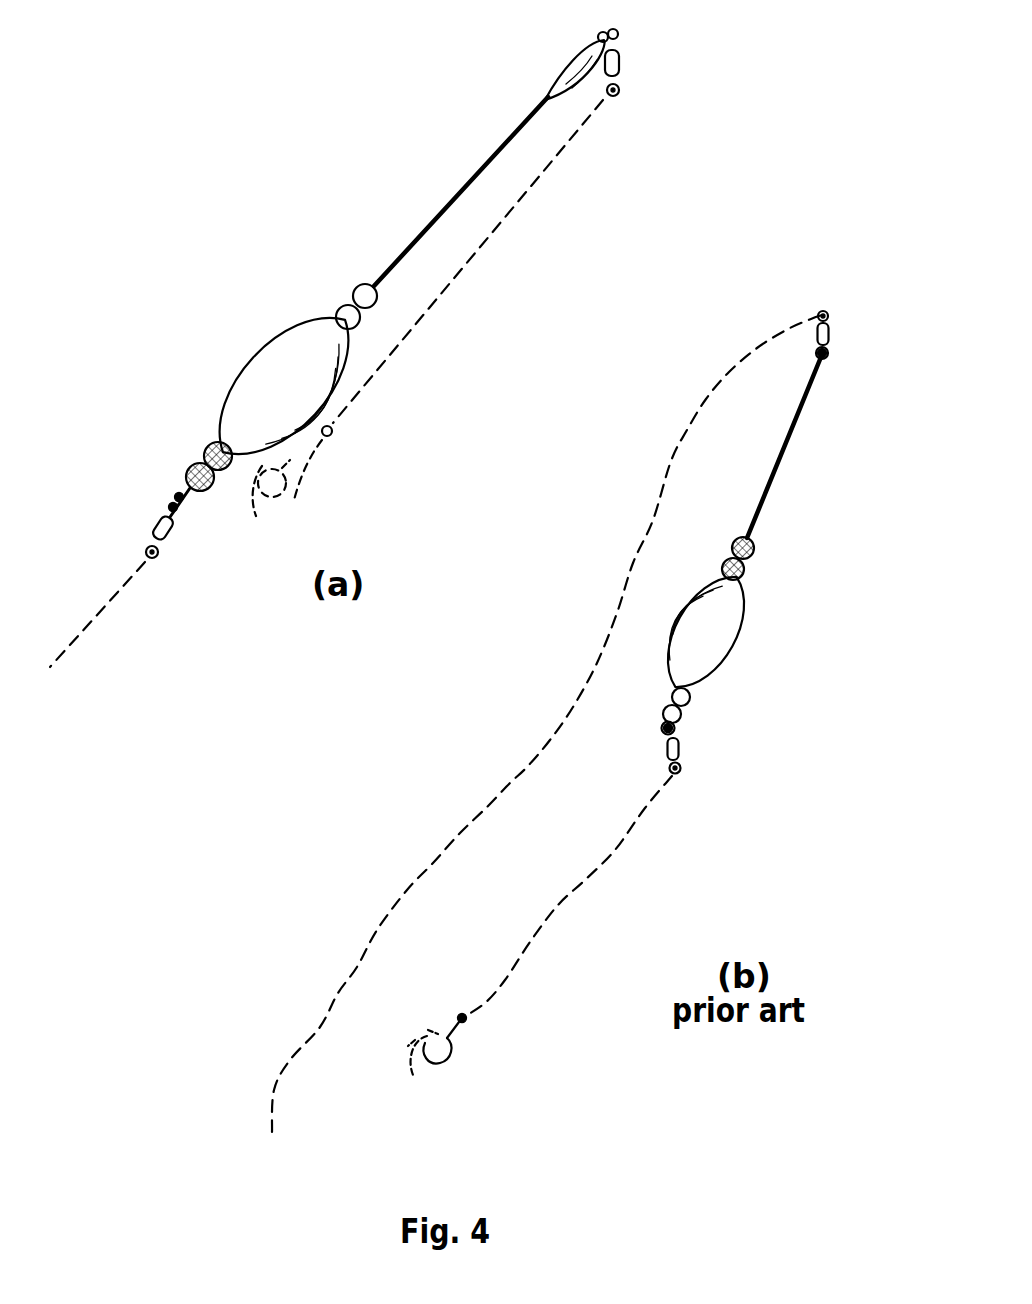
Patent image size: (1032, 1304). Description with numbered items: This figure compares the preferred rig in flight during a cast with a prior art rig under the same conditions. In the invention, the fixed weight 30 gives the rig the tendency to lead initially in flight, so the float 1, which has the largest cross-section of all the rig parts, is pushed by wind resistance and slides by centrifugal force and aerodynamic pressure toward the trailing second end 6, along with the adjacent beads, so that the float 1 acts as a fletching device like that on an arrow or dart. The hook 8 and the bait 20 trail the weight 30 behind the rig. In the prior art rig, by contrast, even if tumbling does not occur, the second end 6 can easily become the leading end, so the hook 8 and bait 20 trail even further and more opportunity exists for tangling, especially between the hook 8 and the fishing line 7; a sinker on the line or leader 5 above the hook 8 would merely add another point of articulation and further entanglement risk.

The float 1 is at (298, 350).
The leader 5 is at (560, 905).
The second end 6 is at (176, 497).
The fishing line 7 is at (95, 617).
The hook 8 is at (448, 1051).
The bait 20 is at (452, 1037).
The fixed weight 30 is at (573, 63).